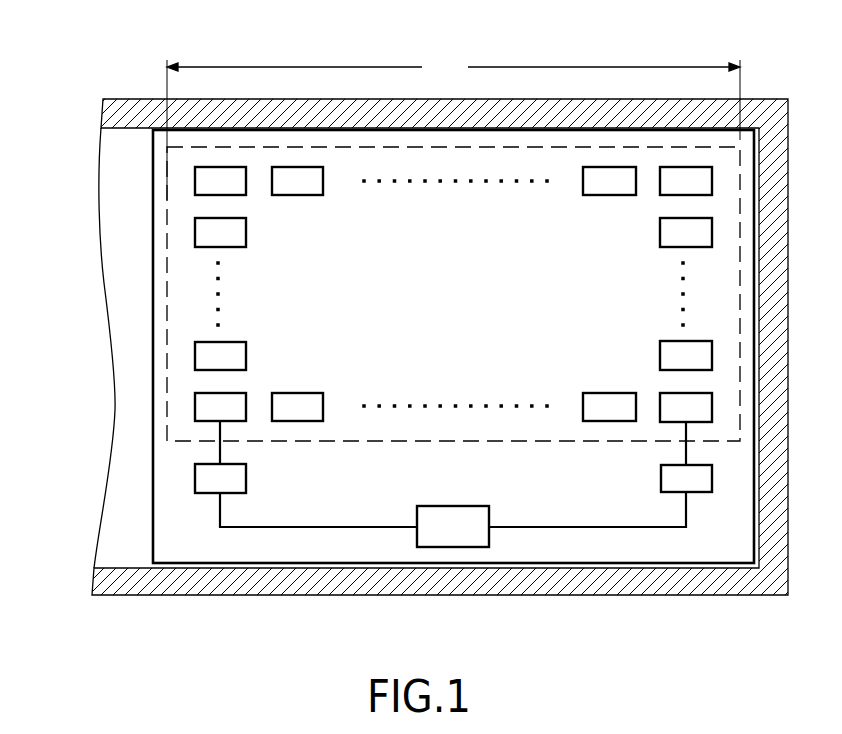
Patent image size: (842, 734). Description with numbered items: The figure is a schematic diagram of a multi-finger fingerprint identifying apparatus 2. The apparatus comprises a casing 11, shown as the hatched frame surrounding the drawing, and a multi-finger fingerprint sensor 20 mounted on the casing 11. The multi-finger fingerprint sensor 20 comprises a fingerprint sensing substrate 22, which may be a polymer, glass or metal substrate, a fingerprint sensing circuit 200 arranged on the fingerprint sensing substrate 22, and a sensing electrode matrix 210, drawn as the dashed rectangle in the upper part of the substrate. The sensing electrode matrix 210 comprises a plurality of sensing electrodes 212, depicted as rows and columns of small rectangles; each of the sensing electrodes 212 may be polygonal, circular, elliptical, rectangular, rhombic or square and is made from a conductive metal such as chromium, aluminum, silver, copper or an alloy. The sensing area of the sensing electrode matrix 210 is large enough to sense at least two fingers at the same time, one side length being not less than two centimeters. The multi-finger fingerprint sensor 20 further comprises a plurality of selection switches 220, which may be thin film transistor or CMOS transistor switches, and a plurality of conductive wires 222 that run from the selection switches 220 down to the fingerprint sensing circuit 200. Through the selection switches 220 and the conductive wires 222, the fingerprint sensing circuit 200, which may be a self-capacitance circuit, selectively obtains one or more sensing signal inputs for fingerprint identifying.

The multi-finger fingerprint identifying apparatus 2 is at (385, 20).
The casing 11 is at (139, 98).
The multi-finger fingerprint sensor 20 is at (152, 160).
The fingerprint sensing substrate 22 is at (648, 550).
The fingerprint sensing circuit 200 is at (463, 537).
The sensing electrode matrix 210 is at (178, 285).
The sensing electrodes 212 is at (205, 182).
The selection switches 220 is at (208, 477).
The conductive wires 222 is at (265, 528).